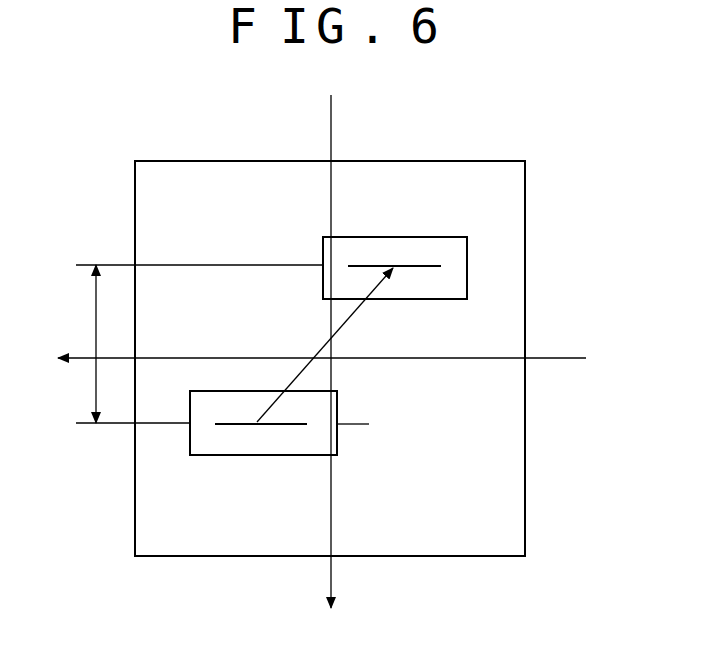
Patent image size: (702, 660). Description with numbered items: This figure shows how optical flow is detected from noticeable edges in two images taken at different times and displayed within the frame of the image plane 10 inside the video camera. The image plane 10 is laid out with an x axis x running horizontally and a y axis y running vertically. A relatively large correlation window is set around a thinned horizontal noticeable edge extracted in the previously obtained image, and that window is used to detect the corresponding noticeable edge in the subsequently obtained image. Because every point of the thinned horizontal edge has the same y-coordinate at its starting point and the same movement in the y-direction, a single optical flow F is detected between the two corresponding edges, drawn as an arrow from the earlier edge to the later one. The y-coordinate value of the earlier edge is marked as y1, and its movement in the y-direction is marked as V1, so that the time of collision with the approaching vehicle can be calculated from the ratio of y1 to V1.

The image plane 10 is at (432, 161).
The optical flow F is at (342, 328).
The movement in the y-direction V1 is at (189, 344).
The y-coordinate value y1 is at (370, 426).
The x-coordinate direction x is at (307, 358).
The y-coordinate direction y is at (328, 367).